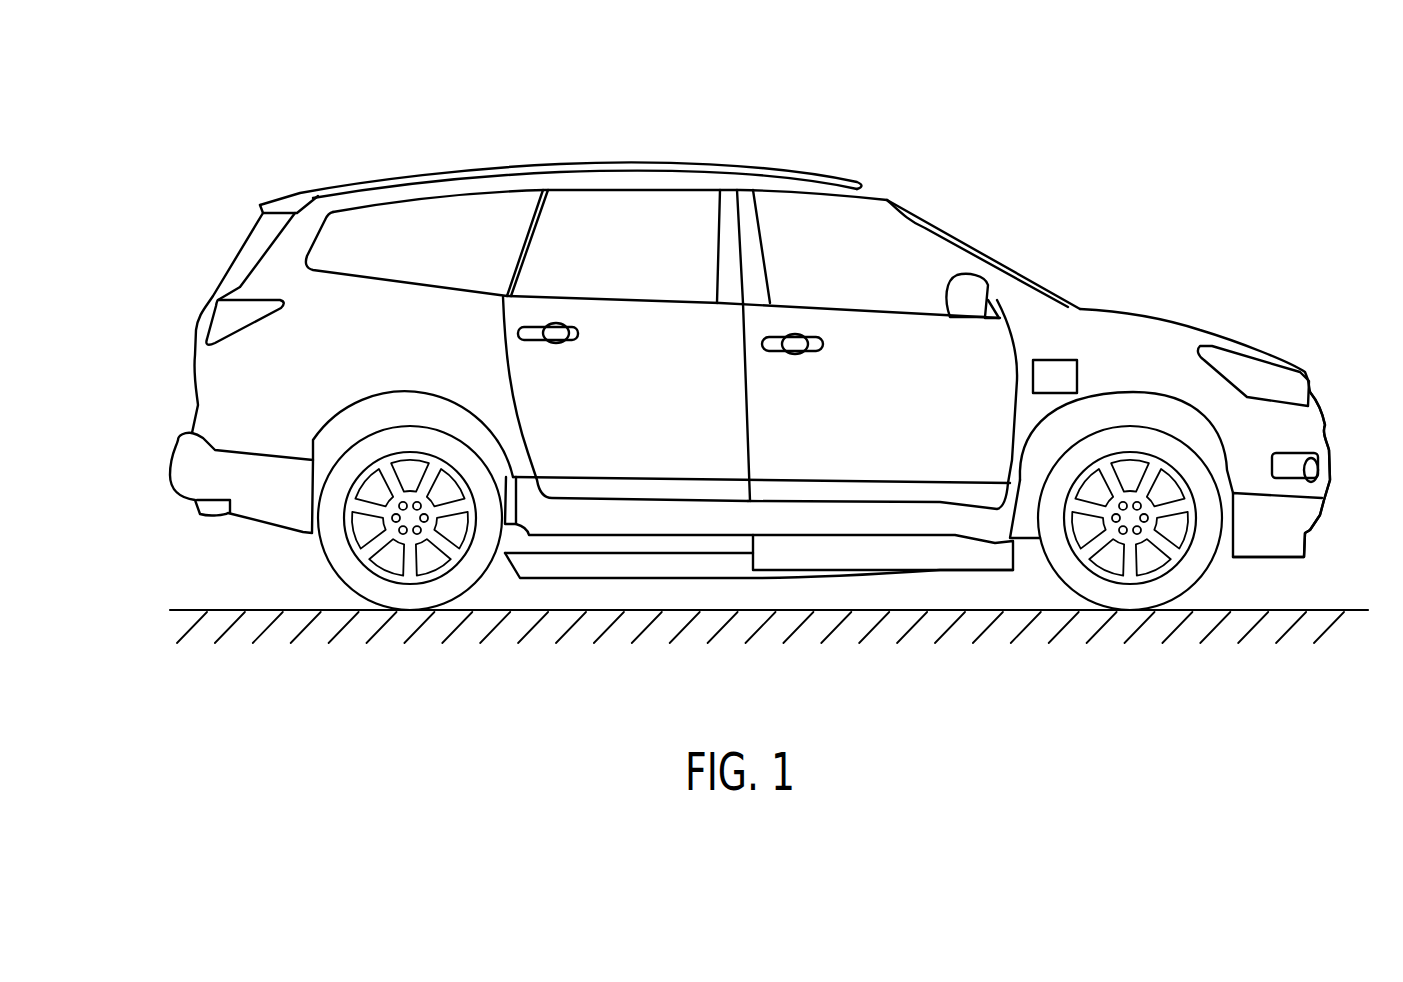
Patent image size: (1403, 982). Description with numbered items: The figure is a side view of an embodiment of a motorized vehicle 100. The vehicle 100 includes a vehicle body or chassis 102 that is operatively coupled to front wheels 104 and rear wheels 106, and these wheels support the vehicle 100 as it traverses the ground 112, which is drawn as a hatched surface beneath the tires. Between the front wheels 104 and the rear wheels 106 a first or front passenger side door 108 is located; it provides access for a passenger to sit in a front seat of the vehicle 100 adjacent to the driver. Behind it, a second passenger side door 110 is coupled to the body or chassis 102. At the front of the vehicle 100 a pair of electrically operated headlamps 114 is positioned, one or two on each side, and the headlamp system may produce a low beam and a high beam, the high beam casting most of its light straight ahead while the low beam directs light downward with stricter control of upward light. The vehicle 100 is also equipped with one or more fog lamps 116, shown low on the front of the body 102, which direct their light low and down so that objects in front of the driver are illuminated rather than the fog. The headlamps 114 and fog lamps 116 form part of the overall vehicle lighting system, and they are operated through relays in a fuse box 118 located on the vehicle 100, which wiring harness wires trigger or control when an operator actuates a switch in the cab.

The motorized vehicle 100 is at (750, 370).
The vehicle body or chassis 102 is at (1297, 430).
The front wheels 104 is at (1163, 587).
The rear wheels 106 is at (447, 593).
The front passenger side door 108 is at (947, 443).
The second passenger side door 110 is at (620, 442).
The ground 112 is at (207, 607).
The headlamps 114 is at (1267, 383).
The fog lamps 116 is at (1318, 470).
The fuse box 118 is at (1063, 360).